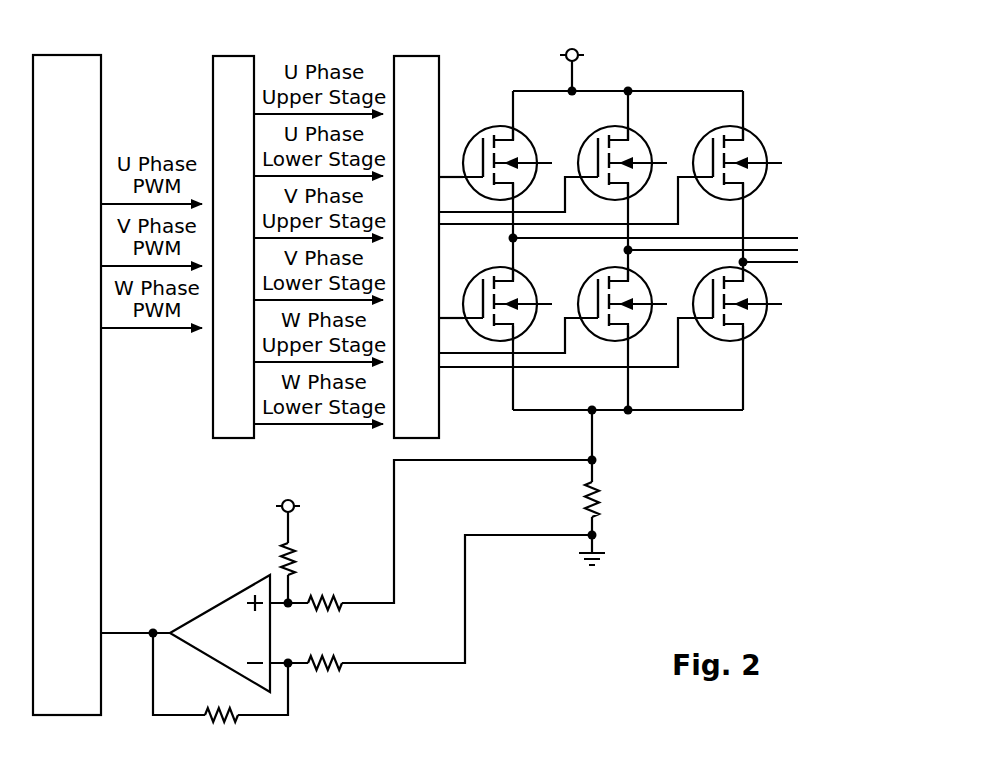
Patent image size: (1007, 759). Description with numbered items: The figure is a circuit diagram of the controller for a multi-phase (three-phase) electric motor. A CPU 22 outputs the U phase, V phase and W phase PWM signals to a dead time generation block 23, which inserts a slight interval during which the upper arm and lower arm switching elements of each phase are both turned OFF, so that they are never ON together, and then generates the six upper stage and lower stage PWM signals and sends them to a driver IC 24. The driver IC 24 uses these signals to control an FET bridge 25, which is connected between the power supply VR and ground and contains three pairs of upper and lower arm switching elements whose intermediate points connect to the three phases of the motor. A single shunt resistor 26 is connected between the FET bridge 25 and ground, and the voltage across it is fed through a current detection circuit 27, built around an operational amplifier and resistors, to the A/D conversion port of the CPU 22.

The CPU 22 is at (77, 55).
The dead time generation block 23 is at (233, 56).
The driver IC 24 is at (418, 56).
The FET bridge 25 is at (701, 78).
The shunt resistor 26 is at (610, 488).
The current detection circuit 27 is at (216, 586).